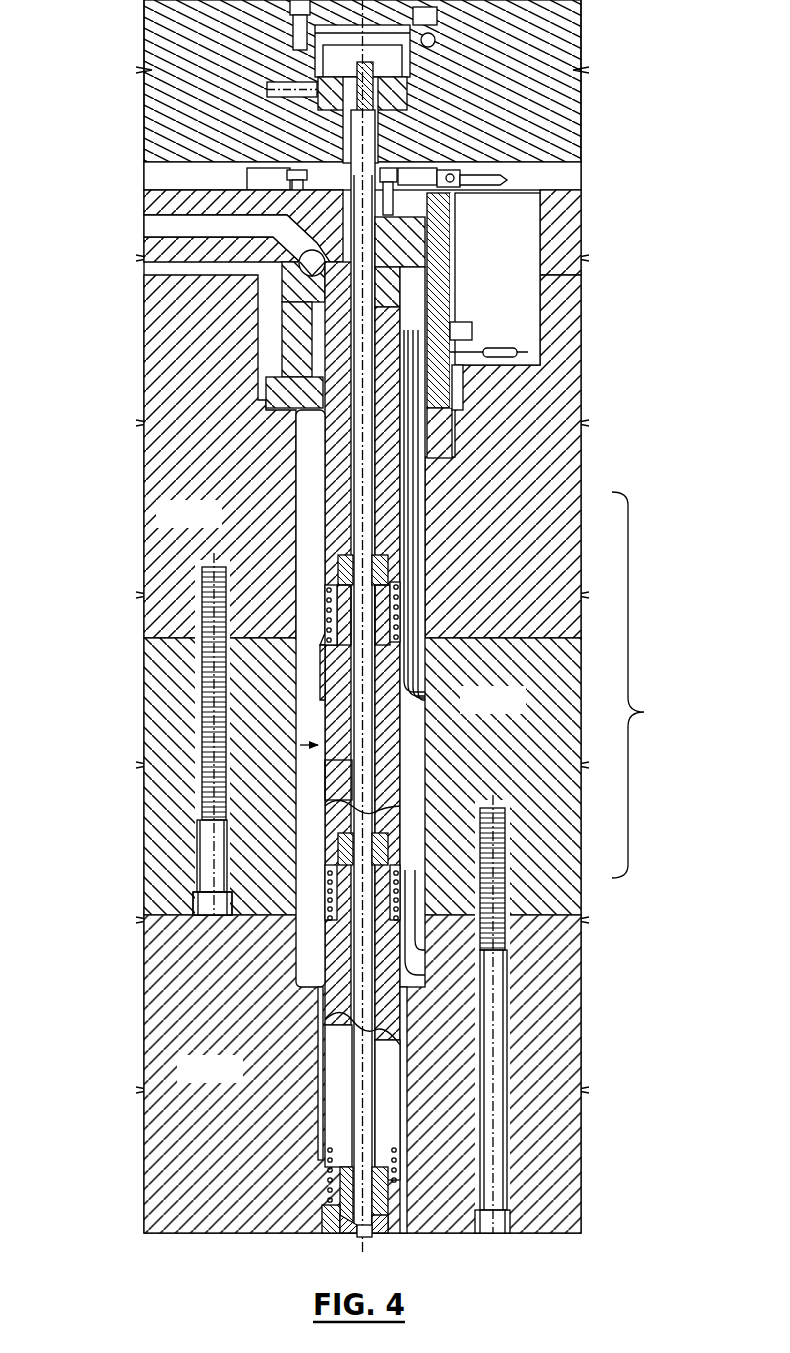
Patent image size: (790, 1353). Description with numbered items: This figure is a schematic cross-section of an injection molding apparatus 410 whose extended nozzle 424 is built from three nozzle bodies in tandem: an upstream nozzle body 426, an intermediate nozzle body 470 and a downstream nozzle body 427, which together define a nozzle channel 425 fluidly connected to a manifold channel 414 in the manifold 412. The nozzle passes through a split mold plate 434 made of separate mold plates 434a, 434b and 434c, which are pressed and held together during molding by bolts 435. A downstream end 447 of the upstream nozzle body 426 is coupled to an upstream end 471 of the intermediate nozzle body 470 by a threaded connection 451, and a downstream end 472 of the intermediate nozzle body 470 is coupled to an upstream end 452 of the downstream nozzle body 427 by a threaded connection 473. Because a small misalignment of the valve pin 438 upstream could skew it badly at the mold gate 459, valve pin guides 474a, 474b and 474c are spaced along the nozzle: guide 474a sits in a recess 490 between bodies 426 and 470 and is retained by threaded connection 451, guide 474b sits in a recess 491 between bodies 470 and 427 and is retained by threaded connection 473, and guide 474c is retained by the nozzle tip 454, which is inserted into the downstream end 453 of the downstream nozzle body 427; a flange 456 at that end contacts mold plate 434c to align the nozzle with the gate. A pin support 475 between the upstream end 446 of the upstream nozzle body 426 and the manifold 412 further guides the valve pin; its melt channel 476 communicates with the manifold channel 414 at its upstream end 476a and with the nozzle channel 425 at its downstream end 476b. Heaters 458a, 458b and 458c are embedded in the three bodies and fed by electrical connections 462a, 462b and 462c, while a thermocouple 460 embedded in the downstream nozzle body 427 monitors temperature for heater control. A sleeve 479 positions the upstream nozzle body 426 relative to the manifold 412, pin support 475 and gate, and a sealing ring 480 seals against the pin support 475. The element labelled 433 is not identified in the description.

The injection molding apparatus 410 is at (612, 128).
The manifold 412 is at (165, 206).
The manifold channel 414 is at (163, 230).
The nozzle 424 is at (205, 690).
The nozzle channel 425 is at (323, 673).
The upstream nozzle body 426 is at (388, 488).
The downstream nozzle body 427 is at (330, 1015).
The heater wire channel 433 is at (413, 752).
The split mold plate 434 is at (655, 685).
The mold plate 434a is at (220, 525).
The mold plate 434b is at (523, 711).
The mold plate 434c is at (240, 1080).
The bolts 435 is at (205, 770).
The valve pin 438 is at (355, 460).
The upstream end 446 is at (295, 345).
The downstream end 447 is at (325, 633).
The threaded connection 451 is at (398, 608).
The upstream end 452 is at (328, 866).
The downstream end 453 is at (326, 1160).
The nozzle tip 454 is at (345, 1215).
The flange 456 is at (322, 1205).
The heater 458a is at (398, 634).
The heater 458b is at (398, 860).
The heater 458c is at (400, 1125).
The mold gate 459 is at (370, 1246).
The thermocouple 460 is at (404, 1195).
The electrical connection 462a is at (540, 330).
The electrical connection 462b is at (410, 658).
The electrical connection 462c is at (415, 968).
The intermediate nozzle body 470 is at (337, 780).
The upstream end 471 is at (392, 572).
The downstream end 472 is at (418, 928).
The threaded connection 473 is at (320, 930).
The valve pin guide 474a is at (390, 562).
The valve pin guide 474b is at (388, 840).
The valve pin guide 474c is at (390, 1168).
The pin support 475 is at (285, 302).
The melt channel 476 is at (300, 298).
The upstream end 476a is at (275, 287).
The downstream end 476b is at (385, 300).
The sleeve 479 is at (272, 402).
The sealing ring 480 is at (380, 313).
The recess 490 is at (330, 567).
The recess 491 is at (375, 812).